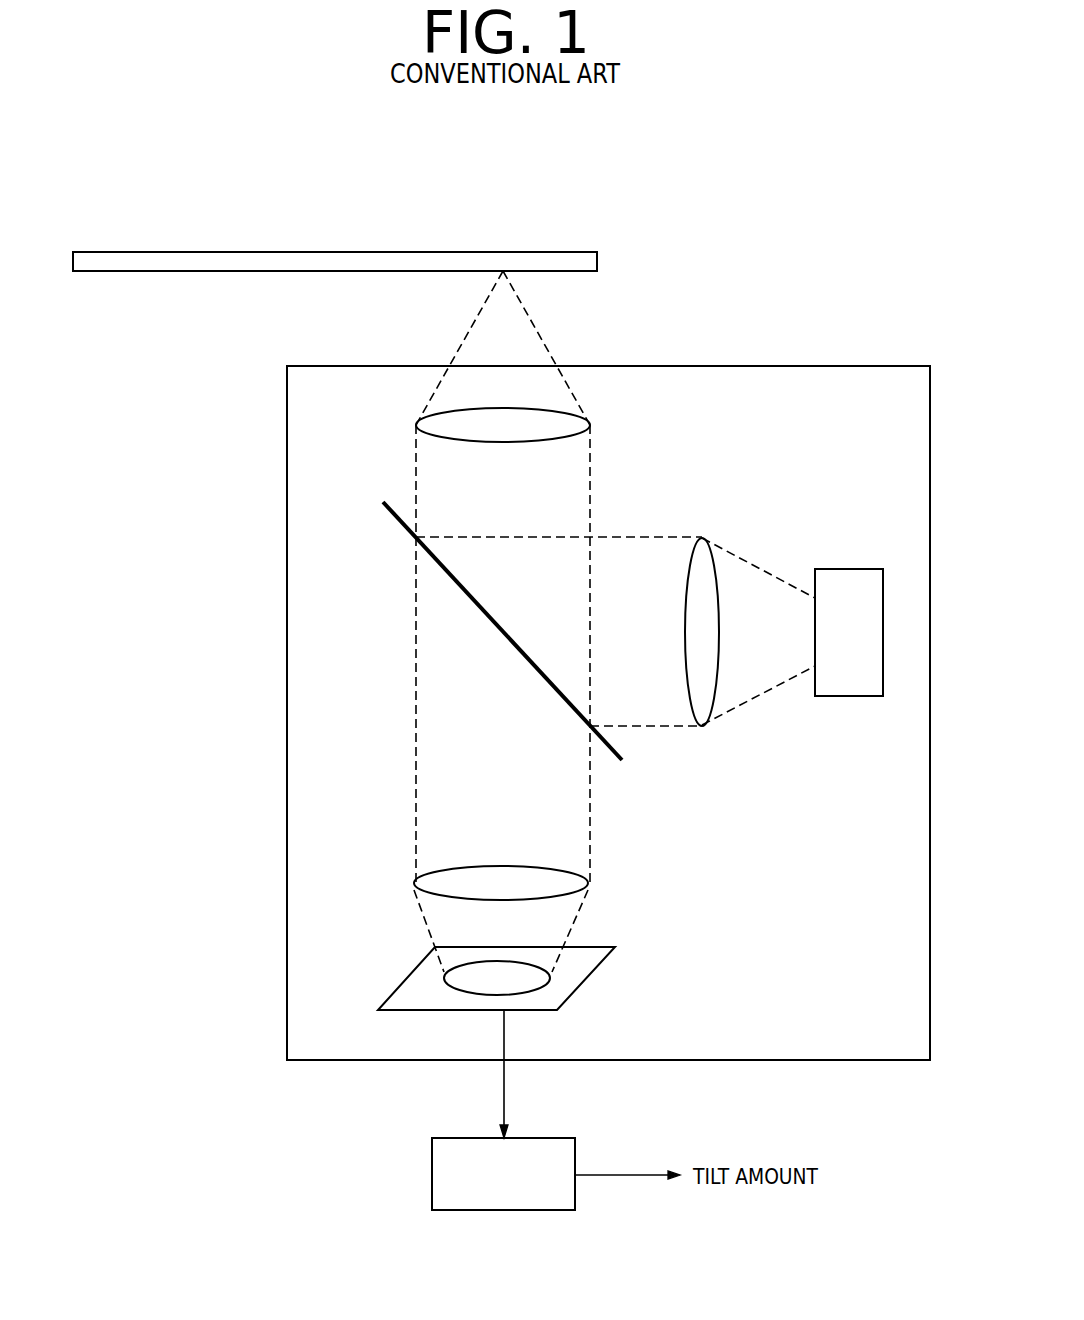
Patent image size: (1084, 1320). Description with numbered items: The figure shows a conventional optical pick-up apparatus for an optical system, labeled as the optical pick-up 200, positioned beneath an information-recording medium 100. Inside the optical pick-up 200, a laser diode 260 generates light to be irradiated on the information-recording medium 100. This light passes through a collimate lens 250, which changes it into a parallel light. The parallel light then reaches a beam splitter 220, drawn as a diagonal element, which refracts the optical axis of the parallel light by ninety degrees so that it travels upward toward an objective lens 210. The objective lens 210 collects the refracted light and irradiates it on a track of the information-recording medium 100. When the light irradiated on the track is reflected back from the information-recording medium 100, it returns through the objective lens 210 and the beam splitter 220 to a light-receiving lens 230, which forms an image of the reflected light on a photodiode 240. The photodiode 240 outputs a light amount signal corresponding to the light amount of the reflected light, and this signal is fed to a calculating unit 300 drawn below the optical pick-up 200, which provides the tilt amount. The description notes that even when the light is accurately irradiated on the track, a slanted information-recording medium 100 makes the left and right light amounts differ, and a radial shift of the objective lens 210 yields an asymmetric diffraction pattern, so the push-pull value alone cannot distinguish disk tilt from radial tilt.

The information-recording medium 100 is at (547, 252).
The optical pick-up 200 is at (762, 366).
The objective lens 210 is at (590, 425).
The beam splitter 220 is at (610, 752).
The light-receiving lens 230 is at (588, 883).
The photodiode 240 is at (600, 960).
The collimate lens 250 is at (706, 727).
The laser diode 260 is at (850, 697).
The calculating unit 300 is at (553, 1137).